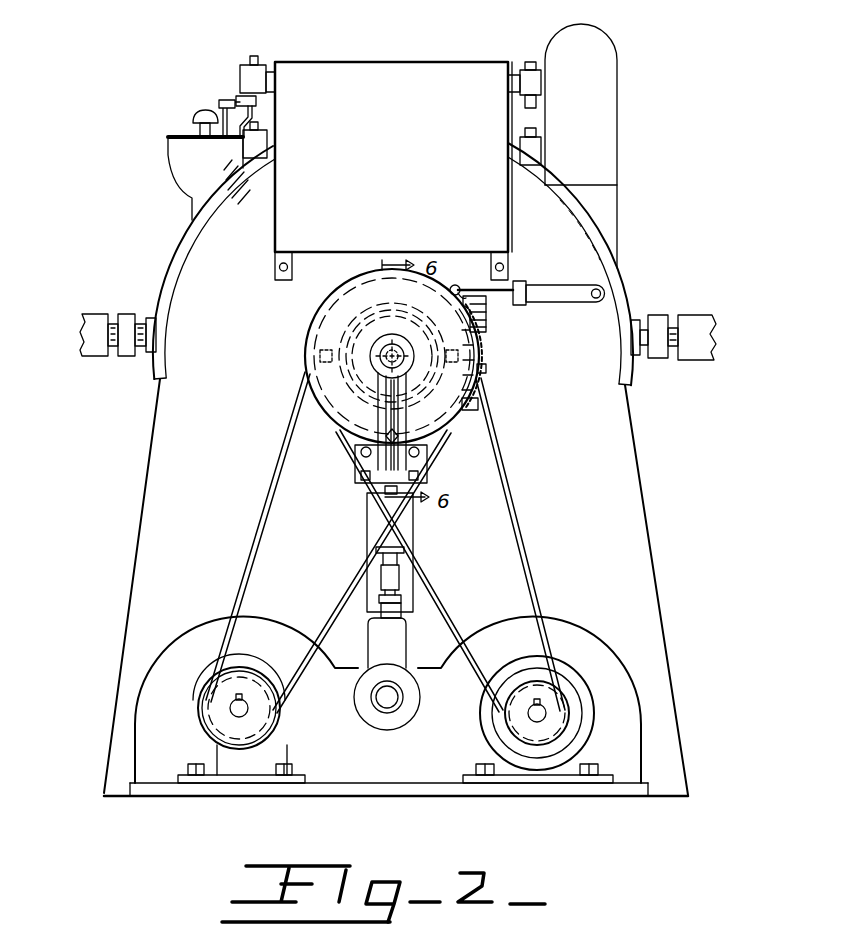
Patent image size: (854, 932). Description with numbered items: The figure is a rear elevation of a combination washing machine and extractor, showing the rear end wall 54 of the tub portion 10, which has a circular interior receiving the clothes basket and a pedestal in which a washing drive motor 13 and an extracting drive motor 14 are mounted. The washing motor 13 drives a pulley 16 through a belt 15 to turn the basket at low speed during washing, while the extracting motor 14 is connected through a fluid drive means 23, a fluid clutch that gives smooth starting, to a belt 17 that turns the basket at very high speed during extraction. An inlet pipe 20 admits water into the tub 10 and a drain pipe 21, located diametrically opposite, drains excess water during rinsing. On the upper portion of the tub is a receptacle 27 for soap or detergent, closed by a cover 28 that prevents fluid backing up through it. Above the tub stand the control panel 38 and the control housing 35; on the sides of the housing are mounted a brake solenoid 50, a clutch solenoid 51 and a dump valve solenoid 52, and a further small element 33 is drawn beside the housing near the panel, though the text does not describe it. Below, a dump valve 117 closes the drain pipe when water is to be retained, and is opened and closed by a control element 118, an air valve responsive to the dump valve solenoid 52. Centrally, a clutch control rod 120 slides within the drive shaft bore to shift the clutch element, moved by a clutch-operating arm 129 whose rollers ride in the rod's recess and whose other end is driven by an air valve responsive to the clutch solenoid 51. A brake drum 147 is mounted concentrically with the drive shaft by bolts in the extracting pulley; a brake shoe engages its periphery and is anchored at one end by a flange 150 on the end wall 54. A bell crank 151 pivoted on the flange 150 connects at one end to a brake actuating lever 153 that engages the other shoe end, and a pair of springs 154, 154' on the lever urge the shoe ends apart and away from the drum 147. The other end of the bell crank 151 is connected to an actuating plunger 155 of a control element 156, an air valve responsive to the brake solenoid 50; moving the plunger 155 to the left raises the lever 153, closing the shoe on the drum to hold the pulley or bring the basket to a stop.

The tub portion 10 is at (172, 256).
The washing drive motor 13 is at (230, 748).
The extracting drive motor 14 is at (520, 768).
The belt 15 is at (268, 477).
The pulley 16 is at (318, 337).
The belt 17 is at (514, 492).
The inlet pipe 20 is at (86, 314).
The drain pipe 21 is at (702, 326).
The fluid drive means 23 is at (542, 765).
The receptacle 27 is at (176, 152).
The cover 28 is at (180, 136).
The switch 33 is at (524, 78).
The control housing 35 is at (348, 62).
The control panel 38 is at (614, 60).
The brake solenoid 50 is at (526, 150).
The clutch solenoid 51 is at (241, 70).
The dump valve solenoid 52 is at (268, 142).
The end wall 54 is at (606, 314).
The dump valve 117 is at (382, 724).
The control element 118 is at (366, 521).
The clutch control rod 120 is at (392, 344).
The clutch-operating arm 129 is at (388, 422).
The brake drum 147 is at (338, 330).
The flange 150 is at (488, 331).
The bell crank 151 is at (457, 285).
The brake actuating lever 153 is at (479, 410).
The spring 154 is at (500, 355).
The spring 154' is at (508, 374).
The actuating plunger 155 is at (480, 296).
The control element 156 is at (552, 286).